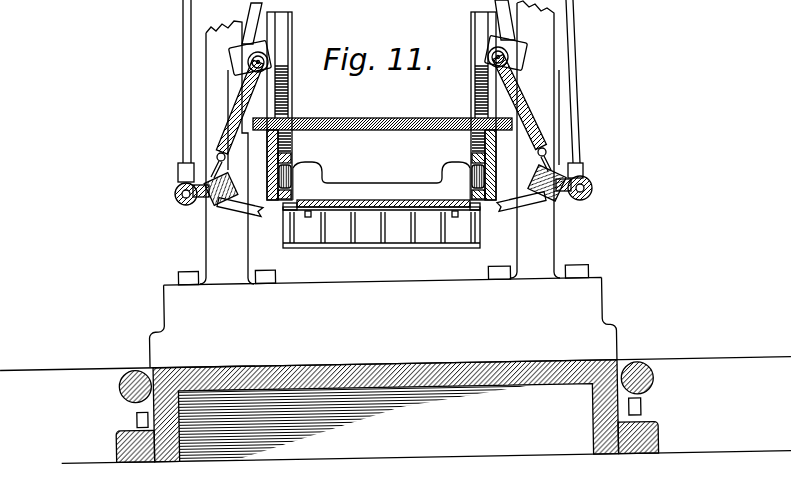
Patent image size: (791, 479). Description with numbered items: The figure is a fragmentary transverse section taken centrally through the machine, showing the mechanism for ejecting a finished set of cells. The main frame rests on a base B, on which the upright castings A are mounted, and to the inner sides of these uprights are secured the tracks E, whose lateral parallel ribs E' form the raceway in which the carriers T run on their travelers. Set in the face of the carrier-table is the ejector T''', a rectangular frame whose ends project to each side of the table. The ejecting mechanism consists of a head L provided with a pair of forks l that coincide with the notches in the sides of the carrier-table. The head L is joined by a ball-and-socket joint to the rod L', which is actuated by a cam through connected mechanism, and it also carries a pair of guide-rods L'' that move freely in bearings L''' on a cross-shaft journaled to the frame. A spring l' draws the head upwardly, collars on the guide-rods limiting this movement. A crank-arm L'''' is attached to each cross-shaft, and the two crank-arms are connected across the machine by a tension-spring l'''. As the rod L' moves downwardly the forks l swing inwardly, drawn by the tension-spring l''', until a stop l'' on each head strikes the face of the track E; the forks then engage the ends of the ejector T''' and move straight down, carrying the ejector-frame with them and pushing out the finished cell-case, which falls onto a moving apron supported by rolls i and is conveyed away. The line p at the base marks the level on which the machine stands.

The upright casting A is at (374, 142).
The base B is at (424, 362).
The floor or platform line p is at (112, 368).
The roll i is at (118, 388).
The head L is at (383, 201).
The rod L' is at (379, 91).
The guide-rod L'' is at (379, 85).
The bearing L''' is at (379, 38).
The crank-arm L'''' is at (381, 106).
The fork l is at (381, 213).
The spring l' is at (382, 124).
The stop l'' is at (382, 184).
The tension-spring l''' is at (382, 114).
The track E is at (381, 170).
The rib E' is at (381, 165).
The carrier T is at (381, 181).
The ejector T''' is at (381, 233).